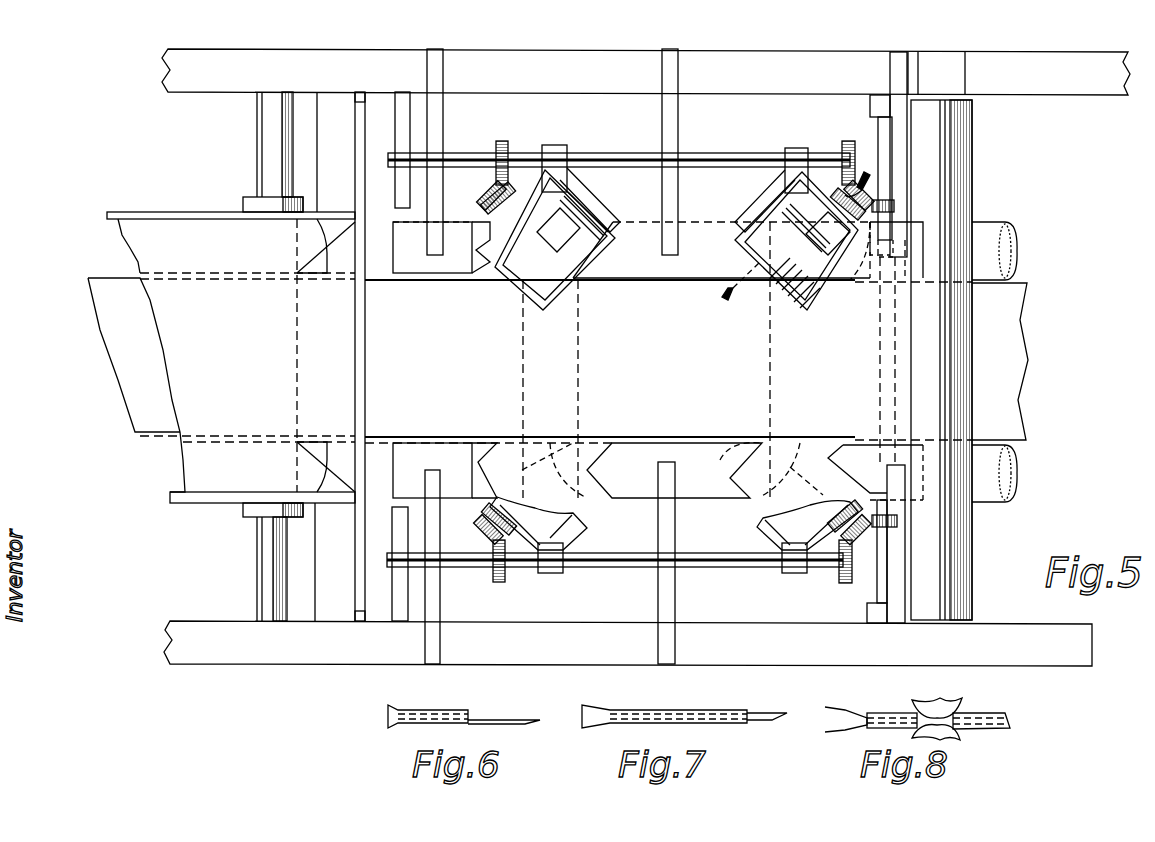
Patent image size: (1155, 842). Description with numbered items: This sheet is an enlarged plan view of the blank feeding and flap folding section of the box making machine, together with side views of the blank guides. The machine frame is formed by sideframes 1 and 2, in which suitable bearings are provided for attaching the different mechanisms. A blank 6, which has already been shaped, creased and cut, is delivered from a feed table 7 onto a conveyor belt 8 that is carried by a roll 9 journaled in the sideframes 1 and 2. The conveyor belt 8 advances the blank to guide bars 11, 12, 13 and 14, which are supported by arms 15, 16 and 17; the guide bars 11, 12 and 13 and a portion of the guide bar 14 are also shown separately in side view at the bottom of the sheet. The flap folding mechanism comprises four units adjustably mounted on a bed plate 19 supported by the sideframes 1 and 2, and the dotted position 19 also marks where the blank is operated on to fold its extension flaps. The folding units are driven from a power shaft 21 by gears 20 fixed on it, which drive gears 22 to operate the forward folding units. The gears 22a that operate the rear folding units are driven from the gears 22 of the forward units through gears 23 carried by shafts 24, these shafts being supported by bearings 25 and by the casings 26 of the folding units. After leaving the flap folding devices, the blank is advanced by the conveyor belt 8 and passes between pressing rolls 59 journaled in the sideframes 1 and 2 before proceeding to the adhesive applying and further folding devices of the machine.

In FIG. 5, the sideframe 1 is at (540, 49).
In FIG. 5, the sideframe 2 is at (298, 664).
In FIG. 5, the blank 6 is at (120, 237).
In FIG. 5, the feed table 7 is at (210, 503).
In FIG. 5, the conveyor belt 8 is at (96, 306).
In FIG. 5, the roll 9 is at (791, 237).
In FIG. 5, the guide bar 11 is at (425, 273).
In FIG. 6, the guide bar 11 is at (463, 706).
In FIG. 5, the guide bar 12 is at (645, 275).
In FIG. 7, the guide bar 12 is at (688, 708).
In FIG. 5, the guide bar 13 is at (862, 420).
In FIG. 8, the guide bar 13 is at (875, 710).
In FIG. 5, the guide bar 14 is at (1015, 224).
In FIG. 8, the guide bar 14 is at (990, 712).
In FIG. 5, the arm 15 is at (443, 65).
In FIG. 5, the arm 16 is at (680, 62).
In FIG. 5, the arm 17 is at (893, 65).
In FIG. 5, the bed plate 19 is at (646, 360).
In FIG. 5, the gear 20 is at (873, 272).
In FIG. 5, the power shaft 21 is at (878, 120).
In FIG. 5, the gear 22 is at (868, 520).
In FIG. 5, the gear 22a is at (490, 200).
In FIG. 5, the gear 23 is at (522, 122).
In FIG. 5, the shaft 24 is at (598, 155).
In FIG. 5, the bearing 25 is at (402, 100).
In FIG. 5, the casing 26 is at (556, 145).
In FIG. 5, the pressing rolls 59 is at (972, 150).
In FIG. 8, the pressing rolls 59 is at (950, 698).